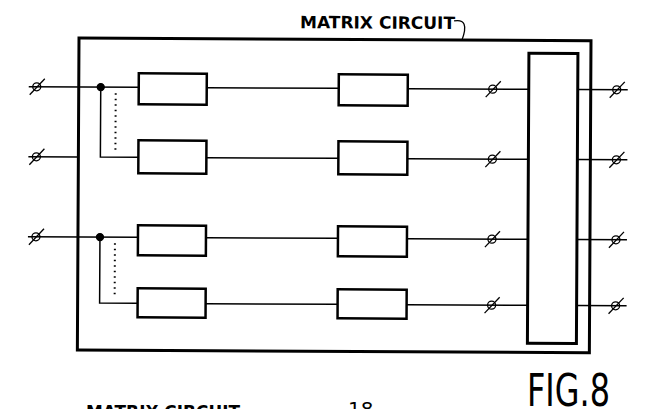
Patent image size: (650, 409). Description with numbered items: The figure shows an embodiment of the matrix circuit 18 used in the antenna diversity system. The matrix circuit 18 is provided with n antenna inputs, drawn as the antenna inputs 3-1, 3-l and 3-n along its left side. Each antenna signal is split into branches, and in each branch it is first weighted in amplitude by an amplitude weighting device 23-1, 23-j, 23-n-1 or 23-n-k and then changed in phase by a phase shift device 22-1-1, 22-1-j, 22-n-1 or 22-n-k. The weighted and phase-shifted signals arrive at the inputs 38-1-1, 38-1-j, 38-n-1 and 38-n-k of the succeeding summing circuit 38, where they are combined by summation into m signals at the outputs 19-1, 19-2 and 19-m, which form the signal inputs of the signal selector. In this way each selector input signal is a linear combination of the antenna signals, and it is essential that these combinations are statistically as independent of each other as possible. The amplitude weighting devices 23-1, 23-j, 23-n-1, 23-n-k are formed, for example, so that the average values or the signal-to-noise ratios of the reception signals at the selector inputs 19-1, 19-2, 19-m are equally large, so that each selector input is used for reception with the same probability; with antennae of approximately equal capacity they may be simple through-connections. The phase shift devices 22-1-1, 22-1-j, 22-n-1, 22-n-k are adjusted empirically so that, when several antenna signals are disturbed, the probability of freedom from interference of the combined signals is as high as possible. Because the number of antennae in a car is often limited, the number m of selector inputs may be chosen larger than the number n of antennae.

The matrix circuit 18 is at (255, 38).
The summing circuit 38 is at (553, 50).
The antenna input 3-1 is at (36, 81).
The antenna input 3-l is at (40, 143).
The antenna input 3-n is at (36, 231).
The amplitude weighting device 23-1 is at (177, 73).
The amplitude weighting device 23-j is at (176, 140).
The amplitude weighting device 23-n-1 is at (168, 225).
The amplitude weighting device 23-n-k is at (170, 284).
The phase shift device 22-1-1 is at (401, 73).
The phase shift device 22-1-j is at (401, 140).
The phase shift device 22-n-1 is at (393, 217).
The phase shift device 22-n-k is at (393, 284).
The summing circuit input 38-1-1 is at (492, 83).
The summing circuit input 38-1-j is at (492, 153).
The summing circuit input 38-n-1 is at (492, 233).
The summing circuit input 38-n-k is at (492, 299).
The signal selector input 19-1 is at (617, 83).
The signal selector input 19-2 is at (617, 153).
The signal selector input 19-m is at (617, 299).